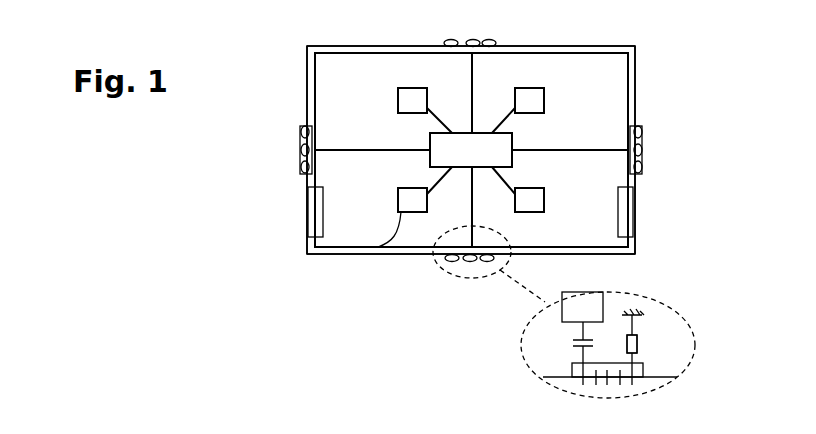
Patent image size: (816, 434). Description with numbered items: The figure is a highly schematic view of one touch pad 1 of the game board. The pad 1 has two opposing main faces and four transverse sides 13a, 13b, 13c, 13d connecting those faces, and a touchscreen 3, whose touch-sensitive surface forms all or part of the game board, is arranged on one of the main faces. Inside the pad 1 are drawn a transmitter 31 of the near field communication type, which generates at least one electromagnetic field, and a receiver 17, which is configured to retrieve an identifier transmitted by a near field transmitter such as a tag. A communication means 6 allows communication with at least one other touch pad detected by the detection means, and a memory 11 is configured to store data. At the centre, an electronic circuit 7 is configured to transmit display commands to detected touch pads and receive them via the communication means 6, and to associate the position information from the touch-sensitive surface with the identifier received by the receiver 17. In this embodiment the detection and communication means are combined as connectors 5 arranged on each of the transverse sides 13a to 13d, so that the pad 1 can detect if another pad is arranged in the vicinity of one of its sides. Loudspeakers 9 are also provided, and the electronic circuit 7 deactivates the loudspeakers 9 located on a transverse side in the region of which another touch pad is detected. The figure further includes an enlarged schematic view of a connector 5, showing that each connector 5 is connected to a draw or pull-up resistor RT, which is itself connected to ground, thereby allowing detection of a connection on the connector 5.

The touch pad 1 is at (276, 67).
The touchscreen 3 is at (378, 88).
The transmitter 31 is at (404, 88).
The connector 5 is at (472, 40).
The communication means 6 is at (530, 88).
The electronic circuit 7 is at (458, 133).
The loudspeakers 9 is at (305, 205).
The memory 11 is at (377, 250).
The transverse side 13a is at (306, 248).
The transverse side 13b is at (588, 49).
The transverse side 13c is at (634, 100).
The transverse side 13d is at (616, 256).
The receiver 17 is at (546, 198).
The draw resistor RT is at (640, 342).